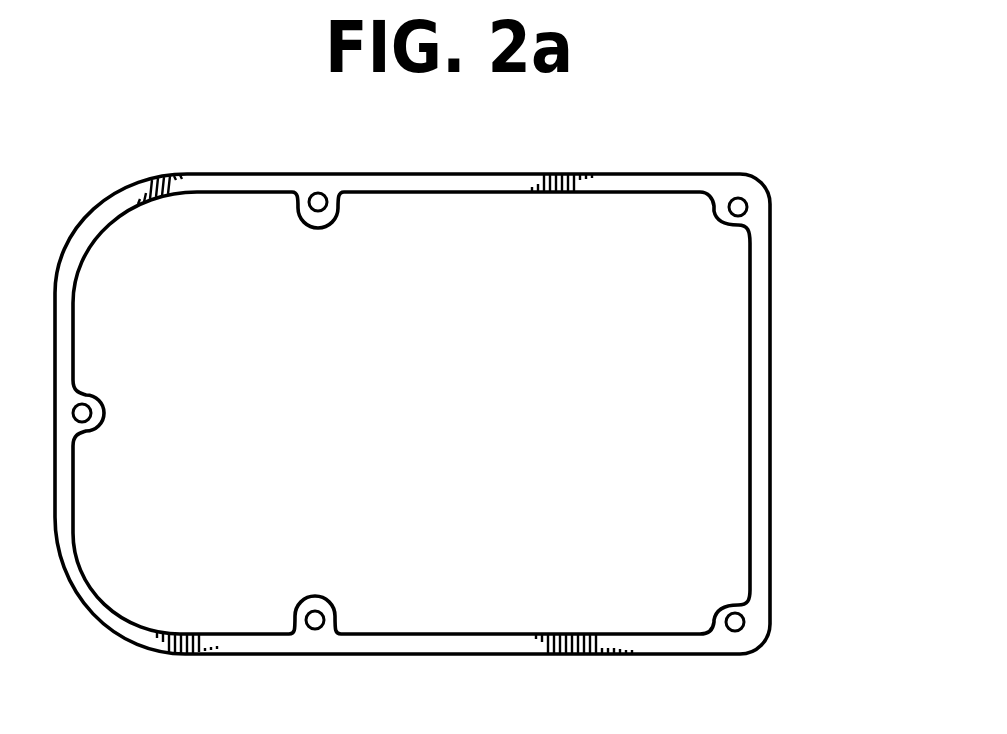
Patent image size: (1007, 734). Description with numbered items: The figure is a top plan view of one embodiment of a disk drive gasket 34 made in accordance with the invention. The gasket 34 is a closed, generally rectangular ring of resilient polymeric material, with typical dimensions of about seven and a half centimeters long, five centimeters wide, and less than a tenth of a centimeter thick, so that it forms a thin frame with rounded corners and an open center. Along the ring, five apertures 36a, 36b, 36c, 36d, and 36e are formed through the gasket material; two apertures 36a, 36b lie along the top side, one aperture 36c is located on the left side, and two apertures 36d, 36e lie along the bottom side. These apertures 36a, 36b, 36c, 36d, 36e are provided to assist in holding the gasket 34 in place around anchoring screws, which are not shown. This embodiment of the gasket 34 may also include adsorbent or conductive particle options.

The disk drive gasket 34 is at (816, 281).
The aperture 36a is at (328, 207).
The aperture 36b is at (730, 213).
The aperture 36c is at (91, 412).
The aperture 36d is at (323, 613).
The aperture 36e is at (718, 610).